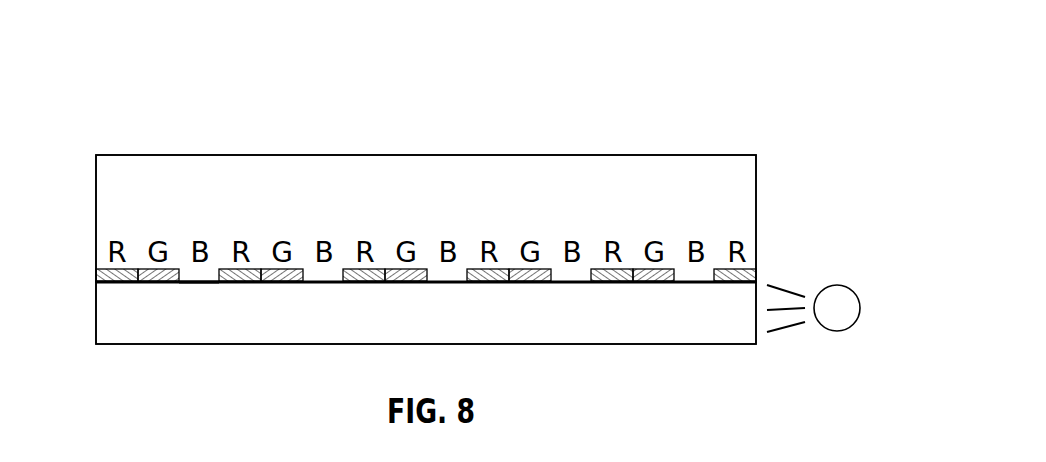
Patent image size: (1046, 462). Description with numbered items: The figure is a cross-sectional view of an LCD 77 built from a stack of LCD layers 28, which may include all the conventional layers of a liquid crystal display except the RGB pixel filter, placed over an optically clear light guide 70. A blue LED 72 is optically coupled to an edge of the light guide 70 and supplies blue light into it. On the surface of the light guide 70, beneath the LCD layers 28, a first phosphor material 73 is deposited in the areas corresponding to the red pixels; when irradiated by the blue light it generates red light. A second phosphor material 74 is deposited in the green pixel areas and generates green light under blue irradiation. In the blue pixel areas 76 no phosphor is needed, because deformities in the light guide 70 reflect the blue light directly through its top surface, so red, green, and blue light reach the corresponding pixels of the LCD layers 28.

The LCD 77 is at (672, 97).
The LCD layers 28 is at (713, 162).
The light guide 70 is at (647, 333).
The blue LED 72 is at (835, 331).
The first phosphor material 73 is at (102, 285).
The second phosphor material 74 is at (158, 282).
The blue pixel areas 76 is at (202, 275).